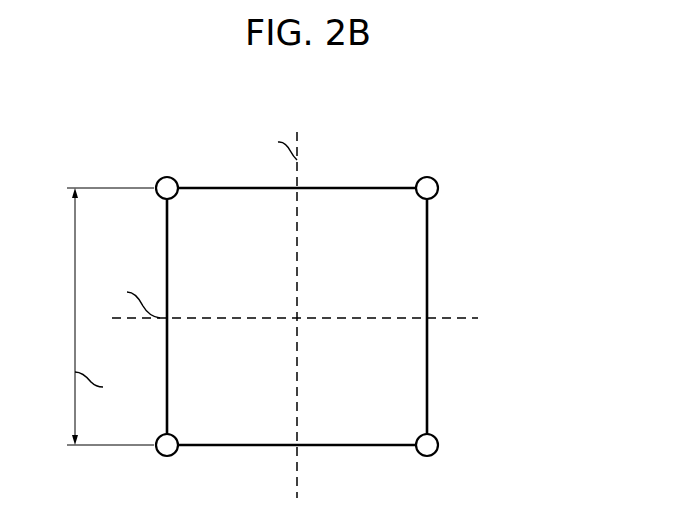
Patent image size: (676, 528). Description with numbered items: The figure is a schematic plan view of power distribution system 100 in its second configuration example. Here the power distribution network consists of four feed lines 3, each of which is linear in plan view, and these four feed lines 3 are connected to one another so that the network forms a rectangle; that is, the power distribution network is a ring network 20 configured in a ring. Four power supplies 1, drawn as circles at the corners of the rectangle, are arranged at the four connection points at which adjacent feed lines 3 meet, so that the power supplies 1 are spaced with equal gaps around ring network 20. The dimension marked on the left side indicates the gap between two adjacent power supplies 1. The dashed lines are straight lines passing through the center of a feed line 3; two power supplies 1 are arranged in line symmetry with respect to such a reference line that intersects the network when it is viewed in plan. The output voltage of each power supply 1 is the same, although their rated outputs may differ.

The power distribution system 100 is at (413, 125).
The ring network 20 is at (428, 296).
The feed line 3 is at (353, 188).
The power supply 1 is at (165, 188).